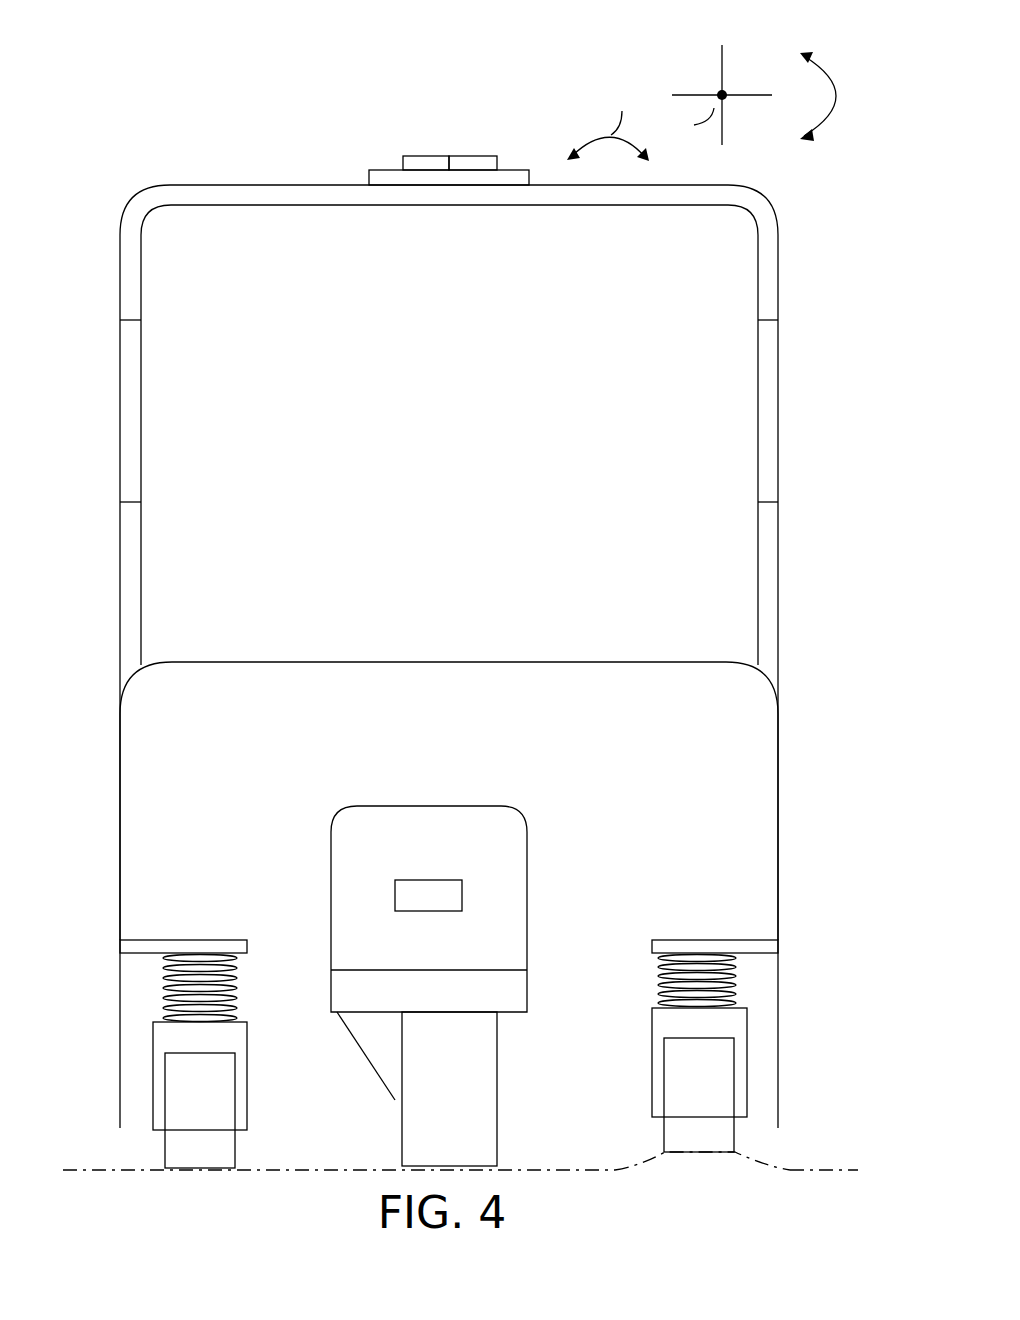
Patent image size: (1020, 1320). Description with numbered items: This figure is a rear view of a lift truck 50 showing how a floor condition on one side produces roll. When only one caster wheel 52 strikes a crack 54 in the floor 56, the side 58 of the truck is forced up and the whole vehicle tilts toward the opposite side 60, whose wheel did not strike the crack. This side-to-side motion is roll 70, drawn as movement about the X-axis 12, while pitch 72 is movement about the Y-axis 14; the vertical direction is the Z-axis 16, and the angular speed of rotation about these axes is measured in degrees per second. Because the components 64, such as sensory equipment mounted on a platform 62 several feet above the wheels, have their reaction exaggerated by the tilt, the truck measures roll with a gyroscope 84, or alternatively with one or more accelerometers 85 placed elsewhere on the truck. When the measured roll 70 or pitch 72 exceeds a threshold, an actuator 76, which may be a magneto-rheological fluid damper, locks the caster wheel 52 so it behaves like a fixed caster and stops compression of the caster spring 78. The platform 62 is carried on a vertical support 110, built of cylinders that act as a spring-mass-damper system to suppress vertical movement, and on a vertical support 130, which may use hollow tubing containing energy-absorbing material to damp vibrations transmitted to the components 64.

The X-axis 12 is at (718, 90).
The Y-axis 14 is at (756, 97).
The Z-axis 16 is at (722, 62).
The lift truck 50 is at (789, 655).
The caster wheel 52 is at (153, 1087).
The crack 54 is at (697, 1165).
The floor 56 is at (333, 1170).
The side 58 is at (778, 860).
The side 60 is at (120, 858).
The platform 62 is at (370, 170).
The components 64 is at (416, 156).
The roll 70 is at (608, 121).
The pitch 72 is at (824, 128).
The actuator 76 is at (165, 982).
The caster spring 78 is at (163, 1008).
The gyroscope 84 is at (443, 880).
The accelerometers 85 is at (475, 156).
The vertical support 110 is at (496, 656).
The vertical support 130 is at (778, 446).